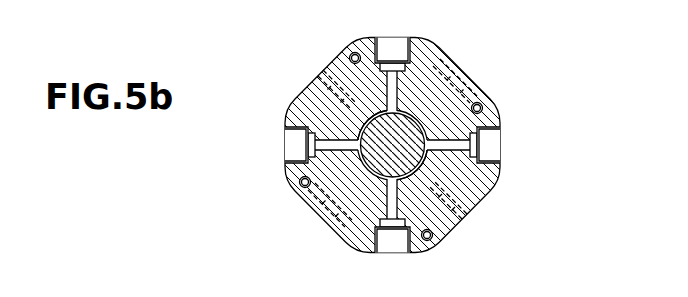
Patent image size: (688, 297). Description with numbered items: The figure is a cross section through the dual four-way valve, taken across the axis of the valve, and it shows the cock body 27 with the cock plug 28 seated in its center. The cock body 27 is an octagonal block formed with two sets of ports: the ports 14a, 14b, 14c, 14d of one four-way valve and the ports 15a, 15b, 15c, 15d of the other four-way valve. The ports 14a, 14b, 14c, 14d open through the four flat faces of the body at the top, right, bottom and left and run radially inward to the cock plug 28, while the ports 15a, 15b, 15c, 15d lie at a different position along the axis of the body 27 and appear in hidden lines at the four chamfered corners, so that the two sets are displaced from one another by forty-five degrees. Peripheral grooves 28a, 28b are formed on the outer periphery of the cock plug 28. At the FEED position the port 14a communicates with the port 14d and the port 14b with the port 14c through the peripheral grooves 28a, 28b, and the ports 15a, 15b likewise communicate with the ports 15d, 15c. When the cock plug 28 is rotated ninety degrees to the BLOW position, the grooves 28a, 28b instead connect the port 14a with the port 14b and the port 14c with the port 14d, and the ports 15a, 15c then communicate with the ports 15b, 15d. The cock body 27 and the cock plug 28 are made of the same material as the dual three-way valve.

The cock body 27 is at (346, 50).
The cock plug 28 is at (417, 100).
The peripheral groove 28a is at (362, 127).
The peripheral groove 28b is at (424, 162).
The port 14a is at (396, 52).
The port 14b is at (490, 144).
The port 14c is at (389, 245).
The port 14d is at (285, 148).
The port 15a is at (308, 72).
The port 15b is at (478, 76).
The port 15c is at (452, 222).
The port 15d is at (312, 225).